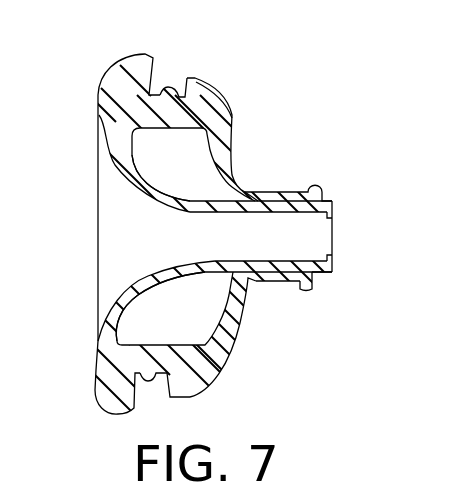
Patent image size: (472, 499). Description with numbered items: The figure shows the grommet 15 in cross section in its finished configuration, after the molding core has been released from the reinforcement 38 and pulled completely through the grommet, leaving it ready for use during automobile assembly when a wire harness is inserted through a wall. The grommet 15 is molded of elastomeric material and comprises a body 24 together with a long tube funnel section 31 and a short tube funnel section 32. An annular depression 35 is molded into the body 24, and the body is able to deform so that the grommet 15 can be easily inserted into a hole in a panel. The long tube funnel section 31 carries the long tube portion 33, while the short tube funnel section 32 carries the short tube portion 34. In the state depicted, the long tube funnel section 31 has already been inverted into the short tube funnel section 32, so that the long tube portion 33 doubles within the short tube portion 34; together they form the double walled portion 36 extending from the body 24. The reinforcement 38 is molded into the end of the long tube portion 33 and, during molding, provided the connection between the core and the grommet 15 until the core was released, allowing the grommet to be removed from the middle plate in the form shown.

The grommet 15 is at (268, 104).
The body 24 is at (108, 77).
The long tube funnel section 31 is at (118, 166).
The short tube funnel section 32 is at (233, 147).
The long tube portion 33 is at (305, 288).
The short tube portion 34 is at (270, 278).
The annular depression 35 is at (170, 76).
The double walled portion 36 is at (300, 178).
The reinforcement 38 is at (340, 208).